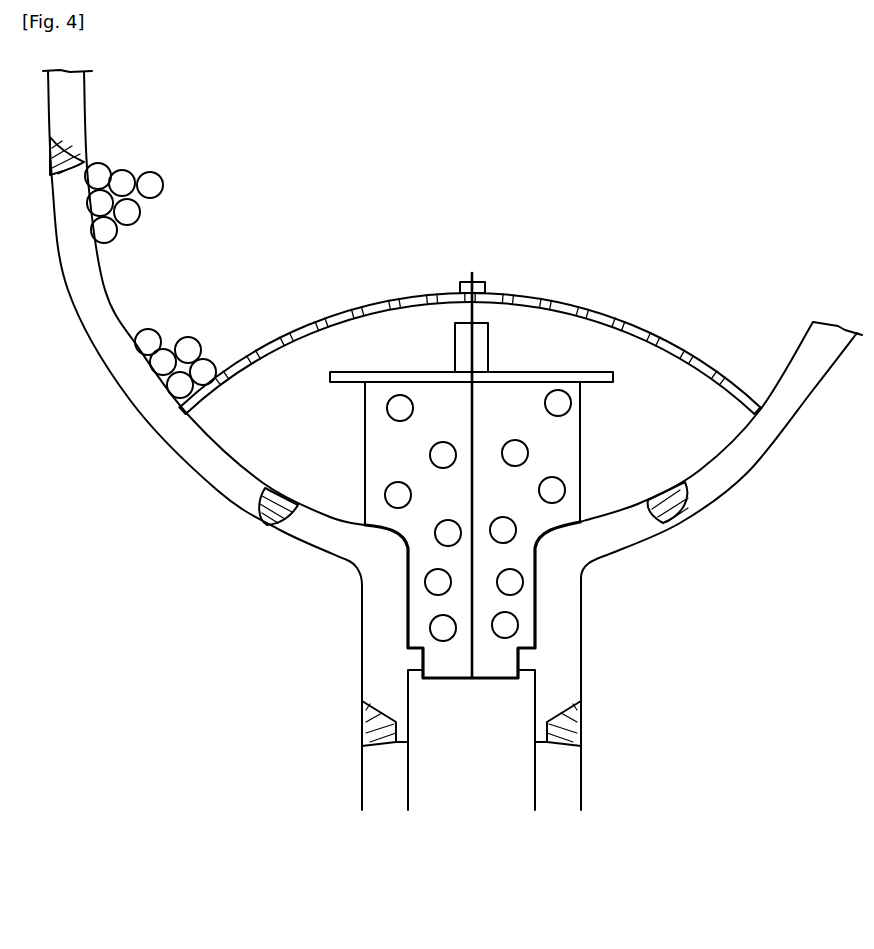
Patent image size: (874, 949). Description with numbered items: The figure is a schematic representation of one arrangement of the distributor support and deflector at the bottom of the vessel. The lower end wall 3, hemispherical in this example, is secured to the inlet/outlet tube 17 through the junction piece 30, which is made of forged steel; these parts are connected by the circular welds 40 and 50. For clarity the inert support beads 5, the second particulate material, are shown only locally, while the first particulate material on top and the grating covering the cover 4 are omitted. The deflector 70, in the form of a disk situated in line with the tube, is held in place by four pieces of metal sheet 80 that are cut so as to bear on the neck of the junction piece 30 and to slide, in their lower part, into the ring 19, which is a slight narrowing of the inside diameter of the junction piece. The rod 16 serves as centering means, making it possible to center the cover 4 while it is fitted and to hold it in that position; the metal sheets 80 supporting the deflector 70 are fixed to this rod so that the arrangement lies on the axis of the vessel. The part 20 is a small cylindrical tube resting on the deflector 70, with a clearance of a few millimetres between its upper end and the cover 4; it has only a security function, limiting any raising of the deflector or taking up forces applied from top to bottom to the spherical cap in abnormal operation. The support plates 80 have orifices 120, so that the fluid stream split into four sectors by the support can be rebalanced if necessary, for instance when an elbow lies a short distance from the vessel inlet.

The lower end wall 3 is at (190, 452).
The cover 4 is at (321, 323).
The inert support beads 5 is at (122, 183).
The rod 16 is at (473, 348).
The inlet/outlet tube 17 is at (373, 785).
The ring 19 is at (527, 666).
The small cylindrical tube 20 is at (480, 330).
The junction piece 30 is at (387, 590).
The circular weld 40 is at (260, 518).
The circular weld 50 is at (362, 715).
The deflector 70 is at (565, 437).
The metal sheet 80 is at (587, 423).
The orifices 120 is at (550, 493).